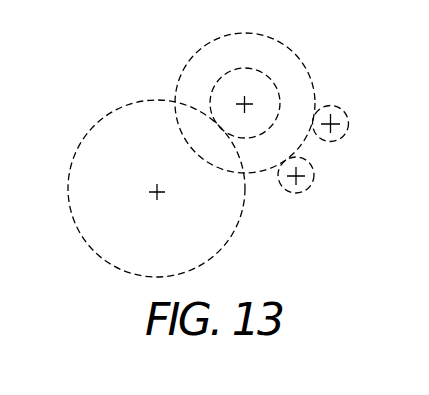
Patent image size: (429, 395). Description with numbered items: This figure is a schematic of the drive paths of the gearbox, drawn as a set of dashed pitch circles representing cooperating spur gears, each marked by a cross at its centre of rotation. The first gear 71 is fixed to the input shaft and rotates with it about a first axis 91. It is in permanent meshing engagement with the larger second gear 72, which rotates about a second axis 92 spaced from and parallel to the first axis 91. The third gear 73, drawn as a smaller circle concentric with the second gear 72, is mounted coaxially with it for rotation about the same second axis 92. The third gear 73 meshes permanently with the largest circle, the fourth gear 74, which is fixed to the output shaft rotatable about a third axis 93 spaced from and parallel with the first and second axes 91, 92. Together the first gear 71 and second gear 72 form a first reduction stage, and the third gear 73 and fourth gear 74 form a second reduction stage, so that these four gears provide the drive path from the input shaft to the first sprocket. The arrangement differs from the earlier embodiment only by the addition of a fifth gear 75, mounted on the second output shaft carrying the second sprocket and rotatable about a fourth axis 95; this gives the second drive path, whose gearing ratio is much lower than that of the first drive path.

The first gear 71 is at (286, 190).
The second gear 72 is at (303, 64).
The third gear 73 is at (265, 73).
The fourth gear 74 is at (78, 148).
The fifth gear 75 is at (348, 131).
The first axis 91 is at (298, 178).
The second axis 92 is at (238, 103).
The third axis 93 is at (152, 190).
The fourth axis 95 is at (332, 119).